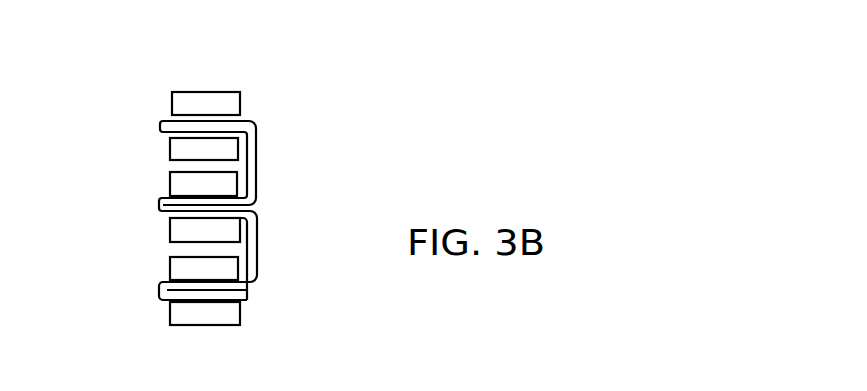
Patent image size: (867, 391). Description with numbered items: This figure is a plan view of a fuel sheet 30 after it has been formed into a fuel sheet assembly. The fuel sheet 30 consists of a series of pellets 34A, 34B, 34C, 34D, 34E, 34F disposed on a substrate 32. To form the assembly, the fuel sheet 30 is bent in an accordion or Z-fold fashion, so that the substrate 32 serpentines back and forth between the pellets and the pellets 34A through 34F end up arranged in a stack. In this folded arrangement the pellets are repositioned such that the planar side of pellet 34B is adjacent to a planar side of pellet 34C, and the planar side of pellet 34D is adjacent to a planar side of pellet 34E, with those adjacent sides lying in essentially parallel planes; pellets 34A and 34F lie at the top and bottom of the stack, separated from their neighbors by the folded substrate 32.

The fuel sheet 30 is at (127, 52).
The substrate 32 is at (252, 187).
The pellet 34A is at (233, 103).
The pellet 34B is at (178, 152).
The pellet 34C is at (178, 188).
The pellet 34D is at (177, 233).
The pellet 34E is at (178, 272).
The pellet 34F is at (208, 318).